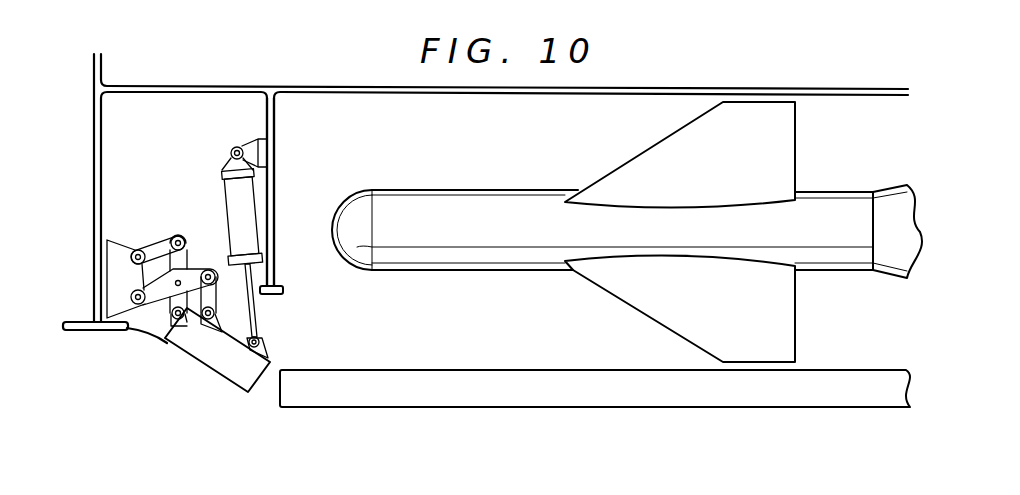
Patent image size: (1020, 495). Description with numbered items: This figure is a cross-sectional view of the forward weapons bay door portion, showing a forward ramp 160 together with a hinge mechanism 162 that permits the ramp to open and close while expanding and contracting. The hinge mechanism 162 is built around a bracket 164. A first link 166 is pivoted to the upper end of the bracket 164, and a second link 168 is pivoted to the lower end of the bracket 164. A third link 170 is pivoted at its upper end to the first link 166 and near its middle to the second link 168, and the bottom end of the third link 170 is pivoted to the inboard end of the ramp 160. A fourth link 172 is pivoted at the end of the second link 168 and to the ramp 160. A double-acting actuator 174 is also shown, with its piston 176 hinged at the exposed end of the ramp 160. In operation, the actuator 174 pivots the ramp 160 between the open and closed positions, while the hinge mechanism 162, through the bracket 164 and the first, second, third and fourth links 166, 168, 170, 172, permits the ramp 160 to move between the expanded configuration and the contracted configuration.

The forward ramp 160 is at (240, 376).
The hinge mechanism 162 is at (158, 188).
The bracket 164 is at (118, 270).
The first link 166 is at (157, 248).
The second link 168 is at (157, 292).
The third link 170 is at (183, 258).
The fourth link 172 is at (272, 283).
The double-acting actuator 174 is at (243, 198).
The piston 176 is at (260, 312).